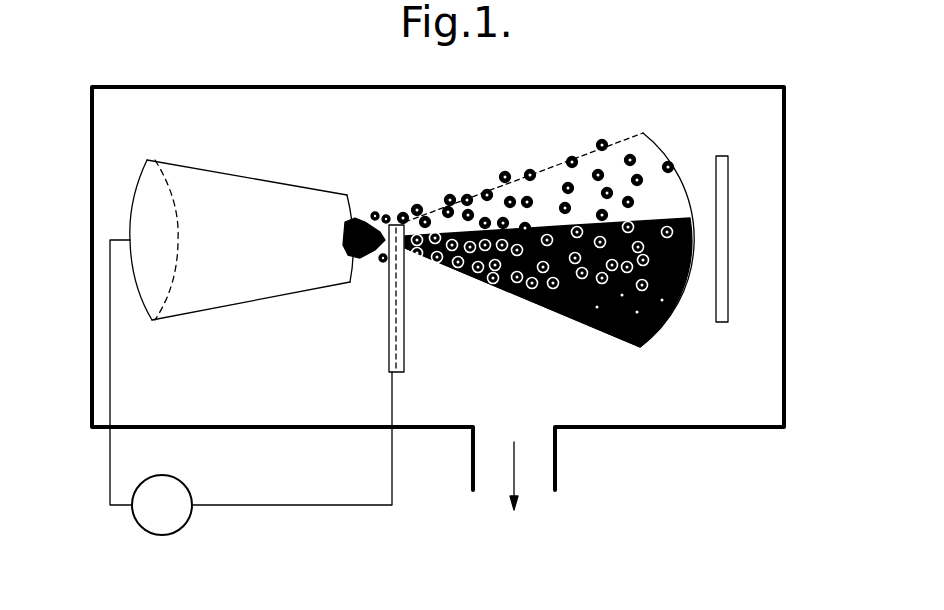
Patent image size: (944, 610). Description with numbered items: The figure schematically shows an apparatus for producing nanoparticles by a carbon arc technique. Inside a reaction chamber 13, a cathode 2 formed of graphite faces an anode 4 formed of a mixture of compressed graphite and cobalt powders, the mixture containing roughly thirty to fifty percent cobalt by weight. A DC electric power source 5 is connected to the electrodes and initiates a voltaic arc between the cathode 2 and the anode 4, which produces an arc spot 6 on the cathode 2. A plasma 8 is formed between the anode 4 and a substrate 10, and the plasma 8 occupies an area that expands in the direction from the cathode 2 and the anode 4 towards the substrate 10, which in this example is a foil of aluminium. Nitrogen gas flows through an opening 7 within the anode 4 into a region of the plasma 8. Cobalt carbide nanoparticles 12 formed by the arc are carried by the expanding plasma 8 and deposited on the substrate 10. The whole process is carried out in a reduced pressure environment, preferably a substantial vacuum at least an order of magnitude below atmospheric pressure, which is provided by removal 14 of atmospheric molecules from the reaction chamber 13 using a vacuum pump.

The cathode 2 is at (148, 218).
The anode 4 is at (404, 346).
The DC electric power source 5 is at (156, 516).
The arc spot 6 is at (346, 235).
The opening 7 is at (388, 331).
The plasma 8 is at (363, 220).
The substrate 10 is at (722, 180).
The cobalt carbide nanoparticles 12 is at (500, 183).
The reaction chamber 13 is at (784, 262).
The removal of atmospheric molecules 14 is at (514, 490).